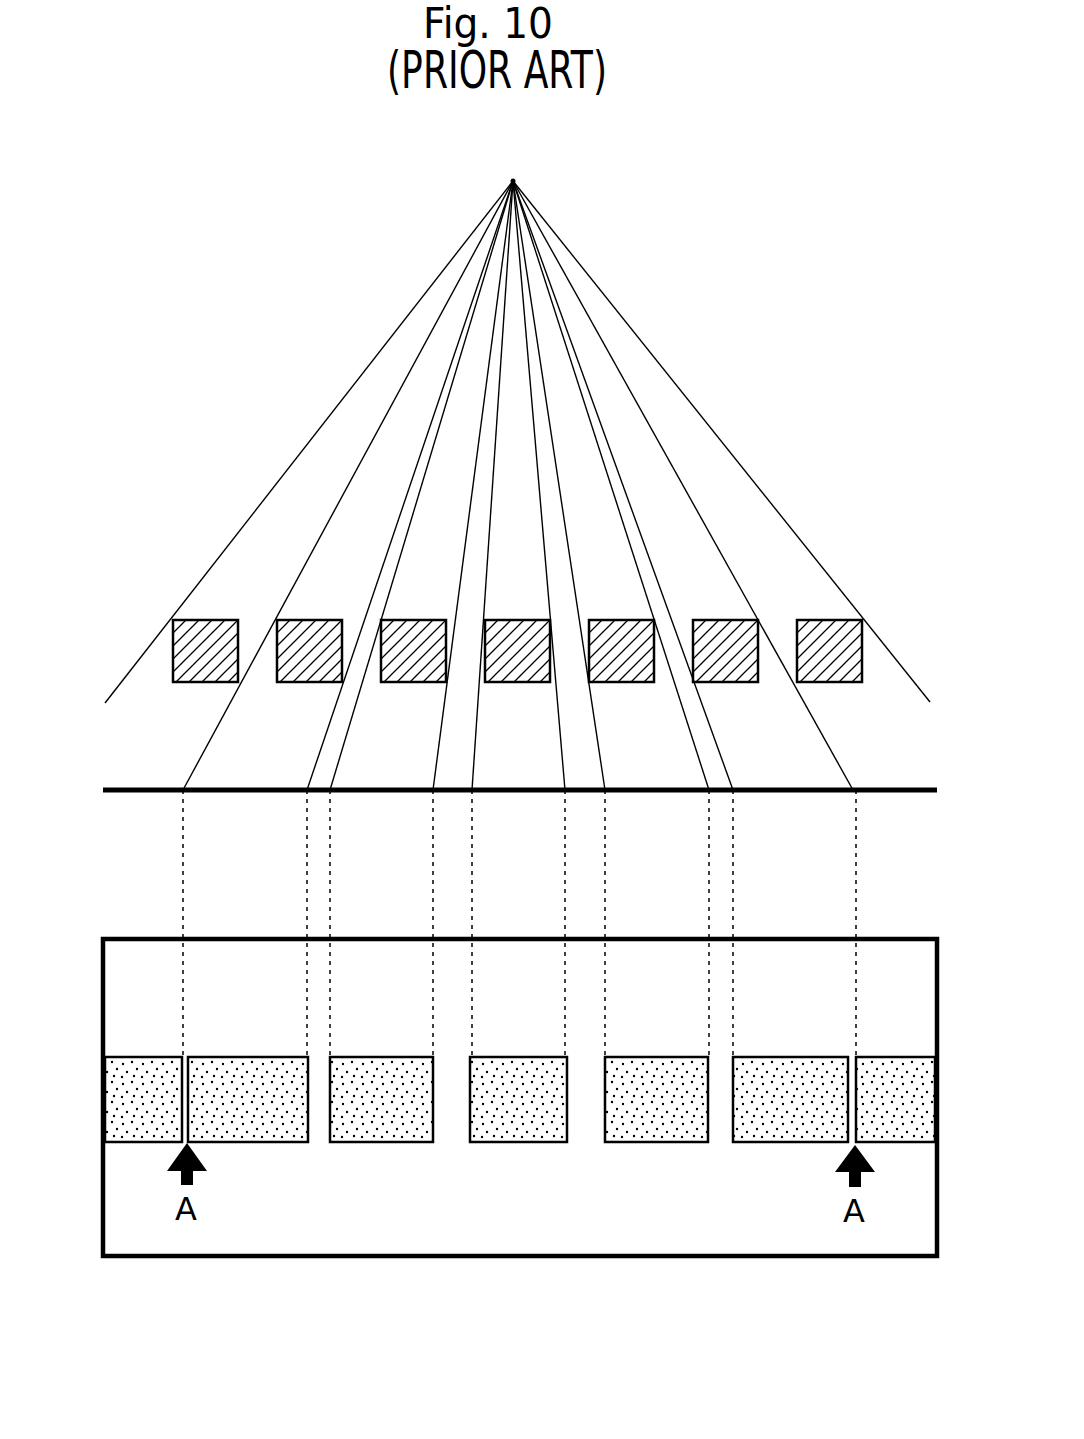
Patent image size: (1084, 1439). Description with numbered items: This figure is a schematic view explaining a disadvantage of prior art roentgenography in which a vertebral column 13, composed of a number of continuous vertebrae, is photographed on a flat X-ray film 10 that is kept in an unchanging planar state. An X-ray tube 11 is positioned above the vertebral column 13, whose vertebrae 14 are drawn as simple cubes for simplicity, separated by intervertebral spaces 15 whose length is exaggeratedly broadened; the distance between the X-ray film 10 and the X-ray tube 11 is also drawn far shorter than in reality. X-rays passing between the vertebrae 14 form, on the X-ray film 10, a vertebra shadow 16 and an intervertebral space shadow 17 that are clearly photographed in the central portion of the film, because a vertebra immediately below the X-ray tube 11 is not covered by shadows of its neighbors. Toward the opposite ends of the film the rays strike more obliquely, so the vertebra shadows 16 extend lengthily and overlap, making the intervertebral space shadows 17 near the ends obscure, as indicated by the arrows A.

The X-ray film 10 is at (153, 783).
The X-ray tube 11 is at (500, 169).
The photomask 13 is at (161, 653).
The vertebra 14 is at (612, 613).
The intervertebral space 15 is at (674, 615).
The vertebra shadow 16 is at (497, 1148).
The intervertebral space shadow 17 is at (588, 1132).